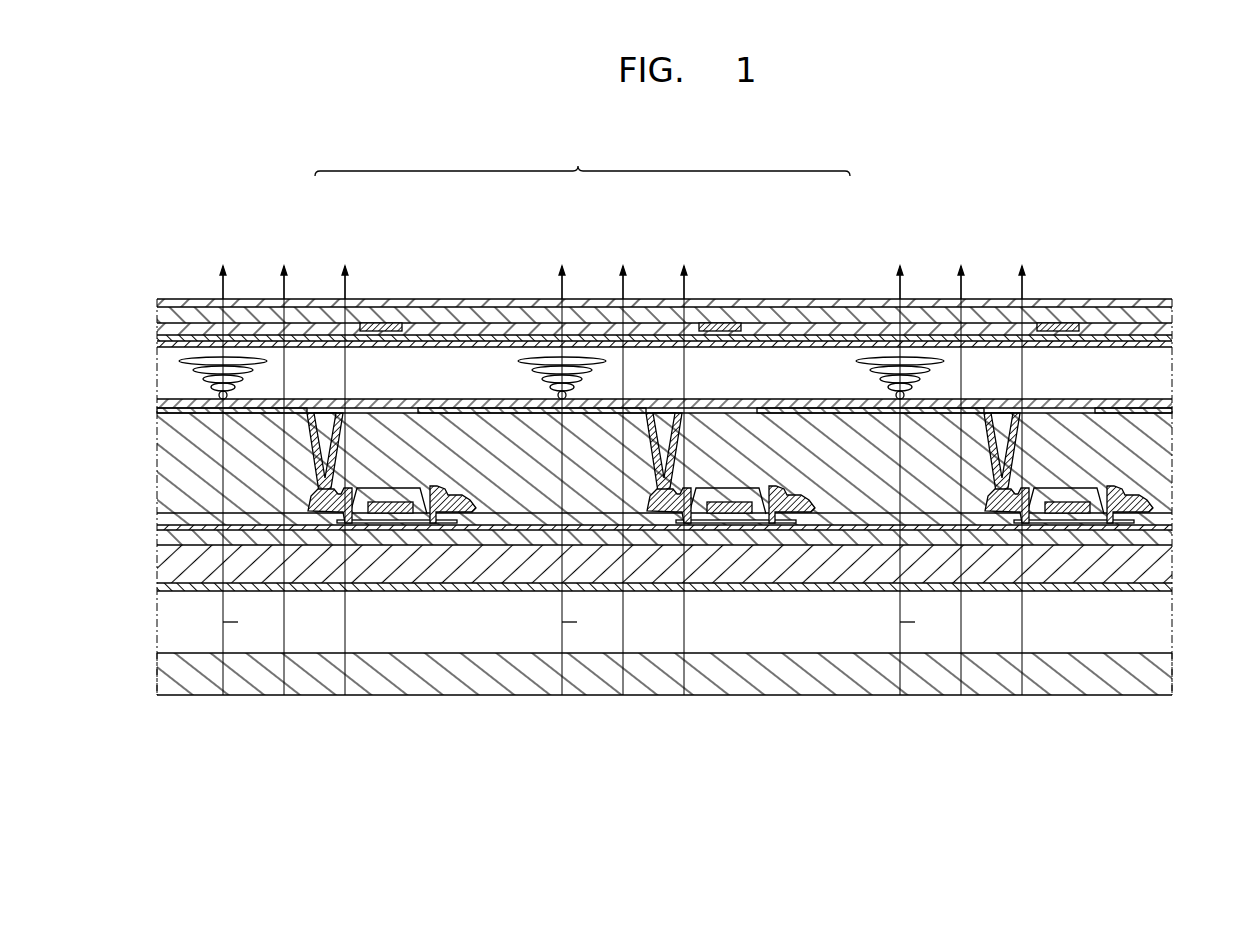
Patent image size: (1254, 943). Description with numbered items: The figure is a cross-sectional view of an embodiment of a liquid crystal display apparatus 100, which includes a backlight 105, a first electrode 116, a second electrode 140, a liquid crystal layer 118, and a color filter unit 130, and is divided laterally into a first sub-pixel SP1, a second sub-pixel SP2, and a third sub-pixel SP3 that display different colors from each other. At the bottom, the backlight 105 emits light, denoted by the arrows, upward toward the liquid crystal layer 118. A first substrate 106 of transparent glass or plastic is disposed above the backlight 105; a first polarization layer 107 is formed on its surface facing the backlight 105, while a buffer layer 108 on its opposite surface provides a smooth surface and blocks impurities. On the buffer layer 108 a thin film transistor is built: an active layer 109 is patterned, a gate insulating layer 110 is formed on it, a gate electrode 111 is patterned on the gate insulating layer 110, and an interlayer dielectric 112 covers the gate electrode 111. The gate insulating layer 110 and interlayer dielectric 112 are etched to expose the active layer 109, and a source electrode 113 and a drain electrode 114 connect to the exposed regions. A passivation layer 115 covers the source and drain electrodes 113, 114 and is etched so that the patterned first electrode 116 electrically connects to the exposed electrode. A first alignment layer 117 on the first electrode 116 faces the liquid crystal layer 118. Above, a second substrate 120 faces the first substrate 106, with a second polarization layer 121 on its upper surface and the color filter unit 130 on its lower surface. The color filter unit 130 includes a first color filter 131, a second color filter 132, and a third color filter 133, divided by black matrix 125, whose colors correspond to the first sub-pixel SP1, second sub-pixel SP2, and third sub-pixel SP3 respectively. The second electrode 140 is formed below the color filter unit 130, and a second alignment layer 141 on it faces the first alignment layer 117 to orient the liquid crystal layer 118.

The LCD apparatus 100 is at (1117, 192).
The backlight 105 is at (1172, 676).
The first substrate 106 is at (1172, 566).
The first polarization layer 107 is at (1172, 588).
The buffer layer 108 is at (1172, 538).
The active layer 109 is at (1088, 531).
The gate insulating layer 110 is at (1172, 528).
The gate electrode 111 is at (1065, 515).
The interlayer dielectric 112 is at (1172, 519).
The source electrode 113 is at (1113, 513).
The drain electrode 114 is at (989, 512).
The passivation layer 115 is at (1172, 462).
The first electrode 116 is at (1172, 412).
The first alignment layer 117 is at (1172, 404).
The liquid crystal layer 118 is at (1160, 371).
The second substrate 120 is at (1172, 313).
The second polarization layer 121 is at (1172, 301).
The black matrix 125 is at (1065, 322).
The color filter unit 130 is at (582, 158).
The first color filter 131 is at (317, 330).
The second color filter 132 is at (547, 330).
The third color filter 133 is at (850, 330).
The second electrode 140 is at (1172, 333).
The second alignment layer 141 is at (1172, 345).
The first sub-pixel SP1 is at (253, 287).
The second sub-pixel SP2 is at (476, 287).
The third sub-pixel SP3 is at (870, 286).